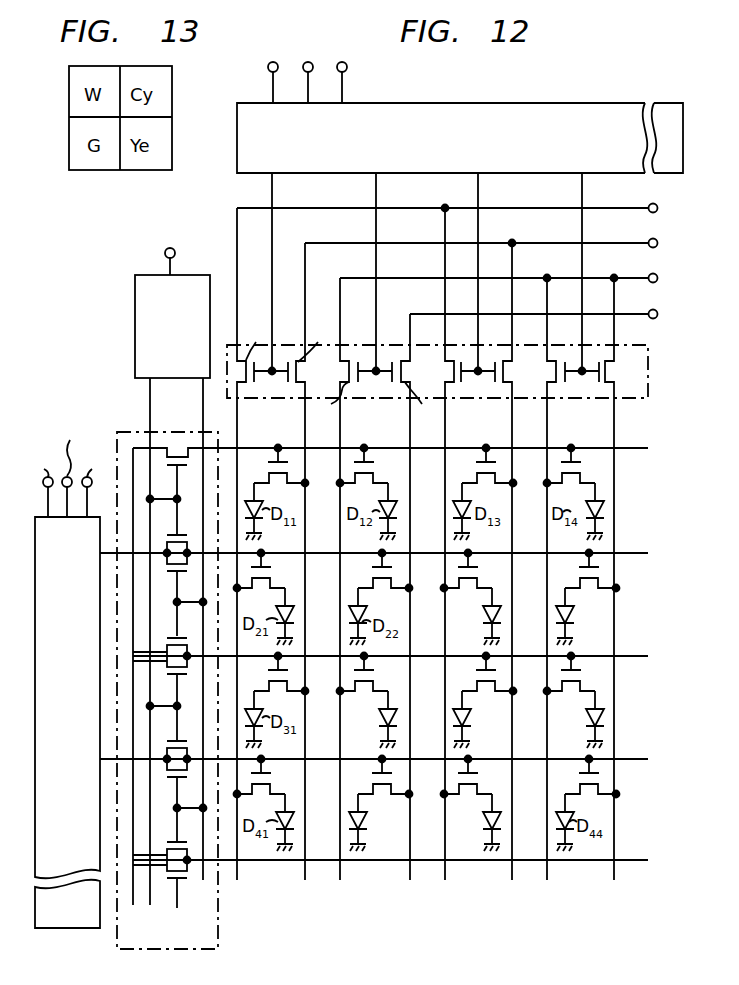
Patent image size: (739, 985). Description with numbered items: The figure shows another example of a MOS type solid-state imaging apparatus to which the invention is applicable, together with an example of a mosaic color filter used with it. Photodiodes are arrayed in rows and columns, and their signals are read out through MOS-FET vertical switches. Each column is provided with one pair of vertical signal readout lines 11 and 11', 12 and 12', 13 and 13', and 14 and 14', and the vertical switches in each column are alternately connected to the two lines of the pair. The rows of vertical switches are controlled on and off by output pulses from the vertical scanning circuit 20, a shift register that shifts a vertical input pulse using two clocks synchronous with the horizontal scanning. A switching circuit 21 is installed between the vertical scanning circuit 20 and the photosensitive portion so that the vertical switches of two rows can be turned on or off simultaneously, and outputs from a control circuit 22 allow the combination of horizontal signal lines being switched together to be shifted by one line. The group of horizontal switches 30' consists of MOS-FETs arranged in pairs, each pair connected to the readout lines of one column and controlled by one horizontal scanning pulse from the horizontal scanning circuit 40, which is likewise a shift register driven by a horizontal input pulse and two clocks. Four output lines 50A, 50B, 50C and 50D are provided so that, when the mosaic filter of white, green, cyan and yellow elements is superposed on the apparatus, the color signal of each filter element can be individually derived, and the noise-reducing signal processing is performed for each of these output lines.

The horizontal scanning circuit 40 is at (588, 103).
The output line 50A is at (465, 209).
The output line 50B is at (499, 244).
The output line 50C is at (517, 279).
The output line 50D is at (552, 315).
The group of horizontal switches 30' is at (459, 375).
The vertical signal readout line 11 is at (255, 544).
The vertical signal readout line 11' is at (288, 561).
The vertical signal readout line 12 is at (358, 579).
The vertical signal readout line 12' is at (392, 597).
The vertical signal readout line 13 is at (463, 544).
The vertical signal readout line 13' is at (495, 561).
The vertical signal readout line 14 is at (565, 579).
The vertical signal readout line 14' is at (597, 579).
The control circuit 22 is at (134, 312).
The switching circuit 21 is at (218, 931).
The vertical scanning circuit 20 is at (58, 929).